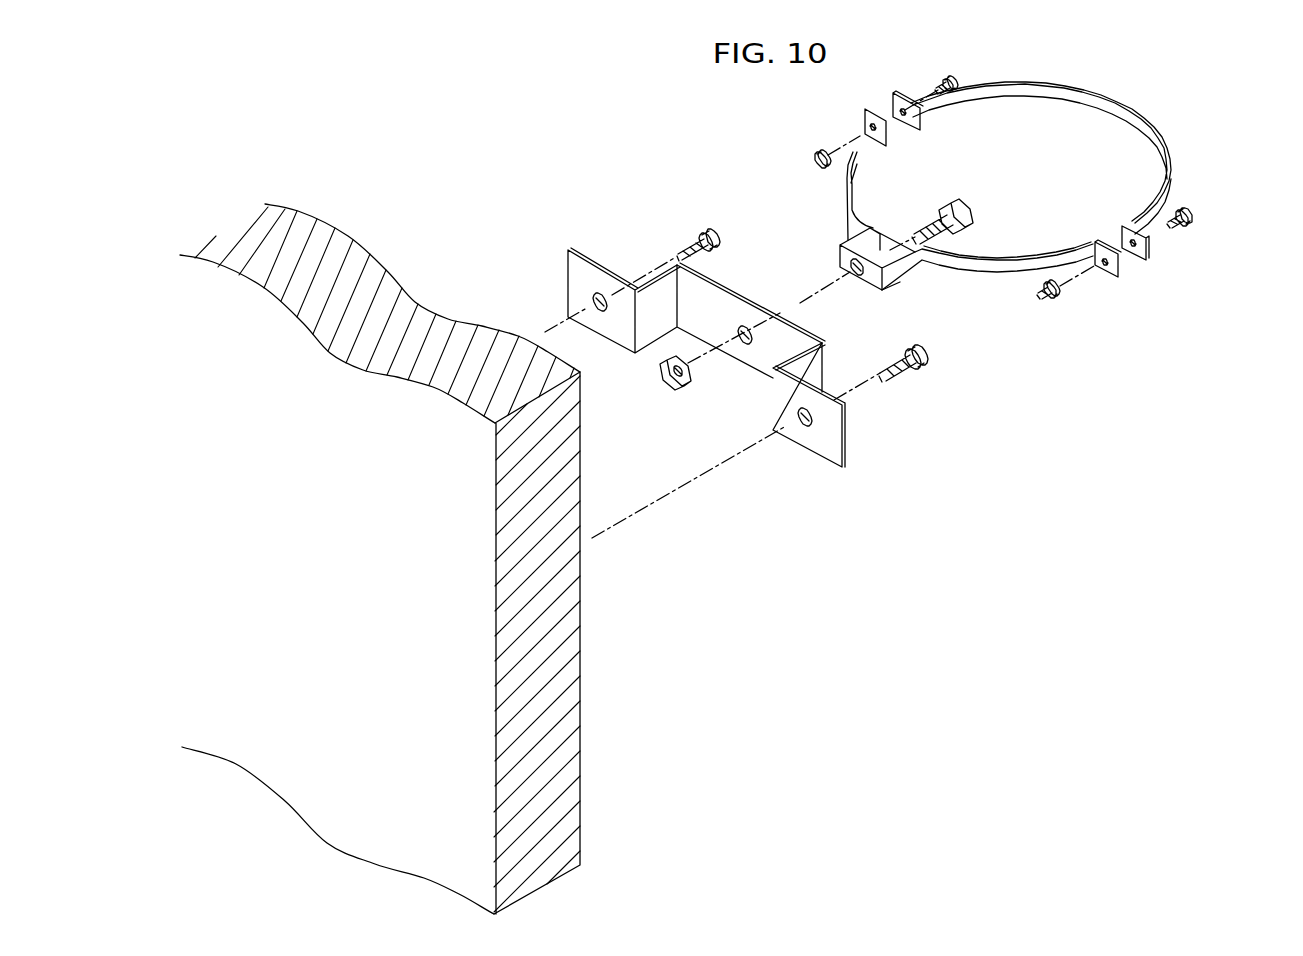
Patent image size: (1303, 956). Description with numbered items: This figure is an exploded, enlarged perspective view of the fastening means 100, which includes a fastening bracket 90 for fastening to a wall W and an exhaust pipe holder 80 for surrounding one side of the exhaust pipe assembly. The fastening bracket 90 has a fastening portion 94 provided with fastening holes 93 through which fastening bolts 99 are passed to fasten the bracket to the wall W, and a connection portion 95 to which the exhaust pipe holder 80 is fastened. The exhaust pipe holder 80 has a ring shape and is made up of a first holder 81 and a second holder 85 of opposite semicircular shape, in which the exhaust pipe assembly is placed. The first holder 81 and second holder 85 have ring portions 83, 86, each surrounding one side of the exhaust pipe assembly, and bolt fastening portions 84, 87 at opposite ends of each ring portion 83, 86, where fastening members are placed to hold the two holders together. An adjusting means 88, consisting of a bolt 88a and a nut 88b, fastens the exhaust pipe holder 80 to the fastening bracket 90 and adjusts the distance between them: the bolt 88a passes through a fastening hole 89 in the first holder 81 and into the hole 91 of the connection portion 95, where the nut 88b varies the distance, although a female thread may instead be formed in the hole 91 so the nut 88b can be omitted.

The fastening means 100 is at (1178, 125).
The wall W is at (568, 676).
The fastening bracket 90 is at (736, 416).
The hole 91 is at (740, 326).
The fastening holes 93 is at (806, 428).
The fastening portion 94 is at (827, 447).
The connection portion 95 is at (753, 356).
The fastening bolts 99 is at (903, 446).
The adjusting means 88 is at (864, 298).
The bolt 88a is at (953, 202).
The nut 88b is at (675, 391).
The fastening hole 89 is at (848, 267).
The exhaust pipe holder 80 is at (1036, 272).
The first holder 81 is at (960, 289).
The ring portion 83 is at (1030, 279).
The bolt fastening portions 84 is at (1113, 282).
The second holder 85 is at (1090, 176).
The ring portion 86 is at (1205, 212).
The bolt fastening portions 87 is at (1148, 247).